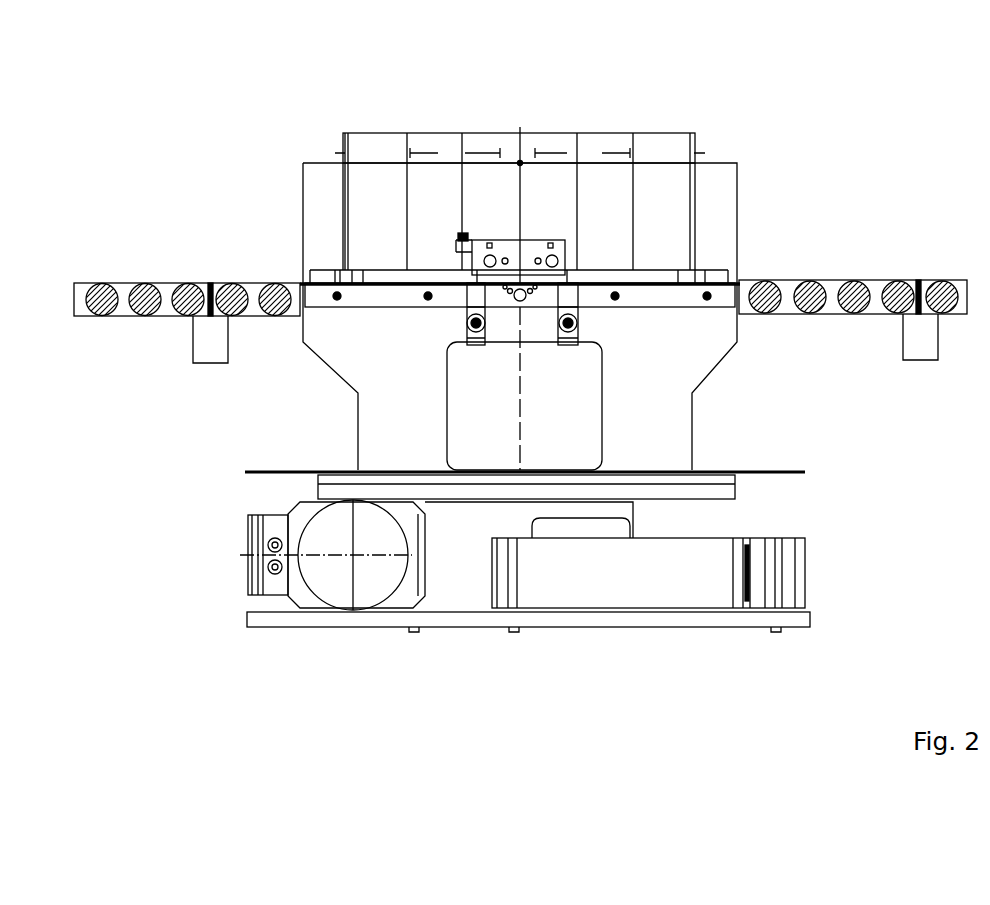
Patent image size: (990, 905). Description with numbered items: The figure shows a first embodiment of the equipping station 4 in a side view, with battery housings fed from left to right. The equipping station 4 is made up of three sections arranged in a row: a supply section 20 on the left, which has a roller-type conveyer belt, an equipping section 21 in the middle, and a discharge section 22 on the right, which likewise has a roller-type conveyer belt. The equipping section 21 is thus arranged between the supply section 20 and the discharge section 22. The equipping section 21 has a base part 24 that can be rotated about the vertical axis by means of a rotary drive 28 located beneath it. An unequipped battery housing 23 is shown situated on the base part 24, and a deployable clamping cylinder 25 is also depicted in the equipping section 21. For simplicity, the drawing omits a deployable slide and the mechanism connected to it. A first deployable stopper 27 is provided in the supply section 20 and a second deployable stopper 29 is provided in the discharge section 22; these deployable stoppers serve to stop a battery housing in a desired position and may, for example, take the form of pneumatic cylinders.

The equipping station 4 is at (212, 190).
The supply section 20 is at (128, 267).
The equipping section 21 is at (708, 120).
The discharge section 22 is at (876, 256).
The unequipped battery housing 23 is at (343, 140).
The base part 24 is at (713, 277).
The deployable clamping cylinder 25 is at (542, 238).
The first deployable stopper 27 is at (200, 352).
The rotary drive 28 is at (318, 532).
The second deployable stopper 29 is at (912, 349).